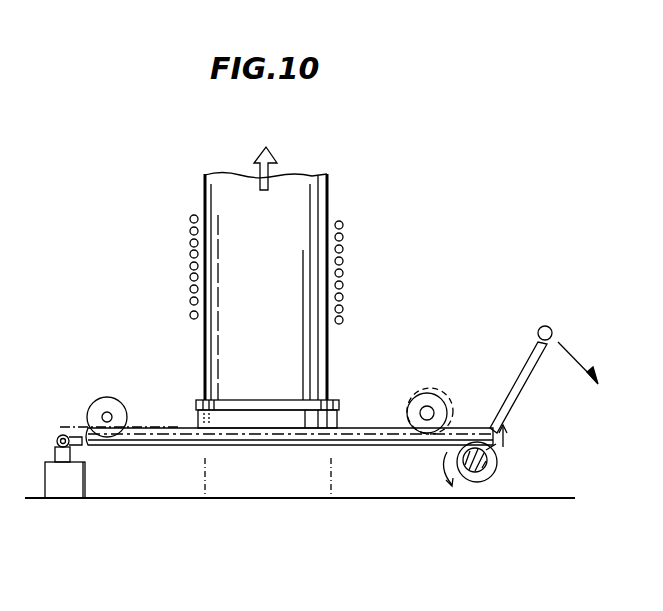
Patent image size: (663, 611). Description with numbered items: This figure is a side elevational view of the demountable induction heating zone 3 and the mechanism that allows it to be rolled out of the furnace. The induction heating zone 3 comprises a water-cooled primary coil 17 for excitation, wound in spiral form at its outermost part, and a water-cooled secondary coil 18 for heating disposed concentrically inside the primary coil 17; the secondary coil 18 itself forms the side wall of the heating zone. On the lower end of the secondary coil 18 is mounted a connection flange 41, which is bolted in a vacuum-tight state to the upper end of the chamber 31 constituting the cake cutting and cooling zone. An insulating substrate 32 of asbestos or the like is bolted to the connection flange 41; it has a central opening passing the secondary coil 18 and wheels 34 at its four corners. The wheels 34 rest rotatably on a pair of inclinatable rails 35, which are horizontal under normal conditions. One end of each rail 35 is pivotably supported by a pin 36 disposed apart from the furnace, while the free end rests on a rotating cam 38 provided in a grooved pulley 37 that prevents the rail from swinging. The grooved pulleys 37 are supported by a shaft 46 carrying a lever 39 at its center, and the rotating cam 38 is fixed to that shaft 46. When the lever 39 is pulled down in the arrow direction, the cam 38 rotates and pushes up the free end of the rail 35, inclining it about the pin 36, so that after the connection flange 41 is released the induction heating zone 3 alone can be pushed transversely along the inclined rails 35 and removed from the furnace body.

The induction heating zone 3 is at (422, 240).
The water-cooled primary coil 17 is at (189, 300).
The water-cooled secondary coil 18 is at (280, 272).
The chamber 31 is at (358, 498).
The insulating substrate 32 is at (133, 428).
The wheels 34 is at (103, 398).
The inclinatable rails 35 is at (457, 428).
The pin 36 is at (63, 435).
The grooved pulley 37 is at (488, 473).
The rotating cam 38 is at (468, 478).
The lever 39 is at (522, 387).
The connection flange 41 is at (255, 423).
The shaft 46 is at (497, 462).